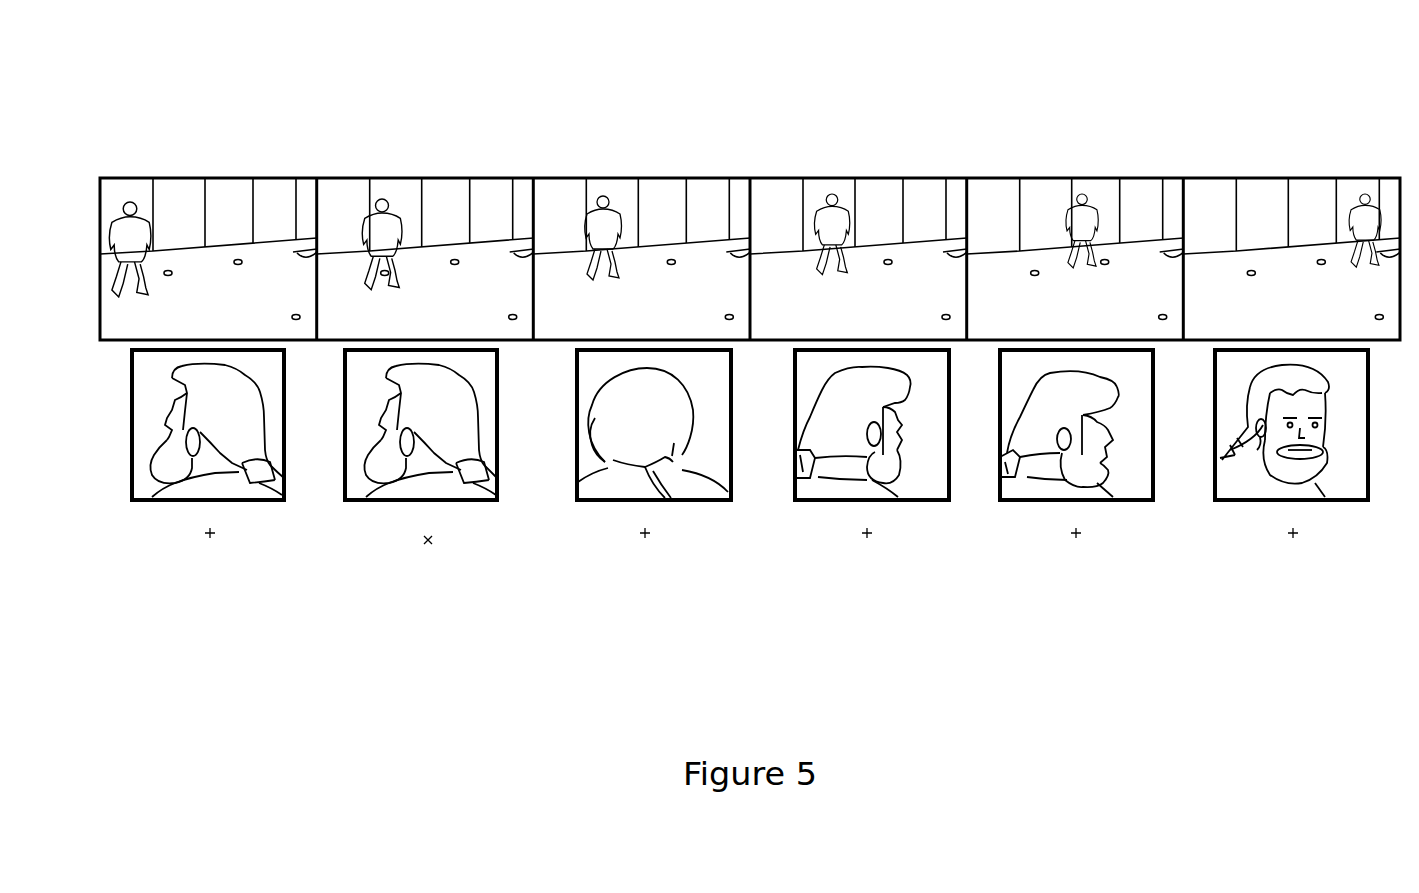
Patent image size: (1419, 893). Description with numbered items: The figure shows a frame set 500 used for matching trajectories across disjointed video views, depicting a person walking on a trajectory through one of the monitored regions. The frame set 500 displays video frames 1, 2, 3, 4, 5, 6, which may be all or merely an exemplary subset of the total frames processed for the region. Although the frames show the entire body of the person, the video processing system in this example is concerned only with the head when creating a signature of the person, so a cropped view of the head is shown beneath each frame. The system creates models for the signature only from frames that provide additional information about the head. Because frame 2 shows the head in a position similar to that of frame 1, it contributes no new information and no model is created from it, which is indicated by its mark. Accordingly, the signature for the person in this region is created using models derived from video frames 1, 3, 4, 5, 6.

The frame set 500 is at (328, 58).
The video frame 1 is at (208, 391).
The video frame 2 is at (425, 391).
The video frame 3 is at (641, 391).
The video frame 4 is at (858, 391).
The video frame 5 is at (1075, 391).
The video frame 6 is at (1291, 391).